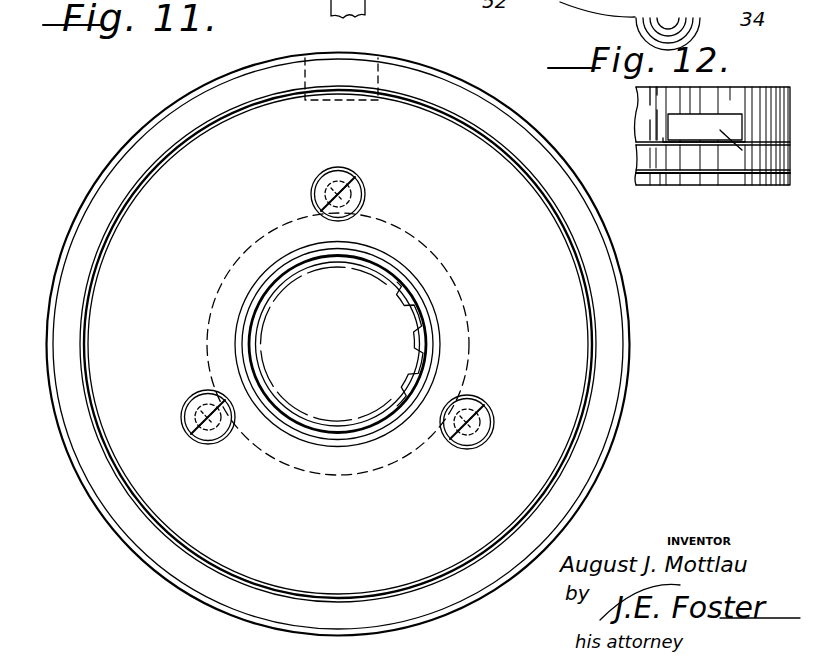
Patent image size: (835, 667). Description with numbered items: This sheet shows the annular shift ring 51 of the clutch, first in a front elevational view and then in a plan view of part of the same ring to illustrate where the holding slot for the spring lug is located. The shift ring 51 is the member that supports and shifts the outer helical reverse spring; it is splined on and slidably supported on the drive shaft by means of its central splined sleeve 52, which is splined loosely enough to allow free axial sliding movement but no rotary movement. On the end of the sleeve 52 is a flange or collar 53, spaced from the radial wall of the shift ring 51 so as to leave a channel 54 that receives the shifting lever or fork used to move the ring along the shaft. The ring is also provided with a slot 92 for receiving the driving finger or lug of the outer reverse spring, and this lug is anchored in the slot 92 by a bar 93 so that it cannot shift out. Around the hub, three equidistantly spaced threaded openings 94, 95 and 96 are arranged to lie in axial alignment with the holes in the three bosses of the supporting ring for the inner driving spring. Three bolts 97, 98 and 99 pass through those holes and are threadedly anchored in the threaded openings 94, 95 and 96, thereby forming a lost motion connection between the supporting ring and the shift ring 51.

In FIG. 11, the annular shift ring 51 is at (683, 341).
In FIG. 12, the annular shift ring 51 is at (636, 98).
In FIG. 11, the central splined sleeve 52 is at (436, 340).
In FIG. 11, the flange or collar 53 is at (445, 272).
In FIG. 12, the flange or collar 53 is at (652, 178).
In FIG. 12, the channel 54 is at (650, 153).
In FIG. 11, the slot 92 is at (360, 64).
In FIG. 12, the slot 92 is at (742, 150).
In FIG. 12, the bar 93 is at (704, 142).
In FIG. 11, the threaded opening 94 is at (355, 196).
In FIG. 11, the threaded opening 95 is at (475, 447).
In FIG. 11, the threaded opening 96 is at (208, 440).
In FIG. 11, the bolt 97 is at (312, 188).
In FIG. 11, the bolt 98 is at (492, 408).
In FIG. 11, the bolt 99 is at (182, 401).